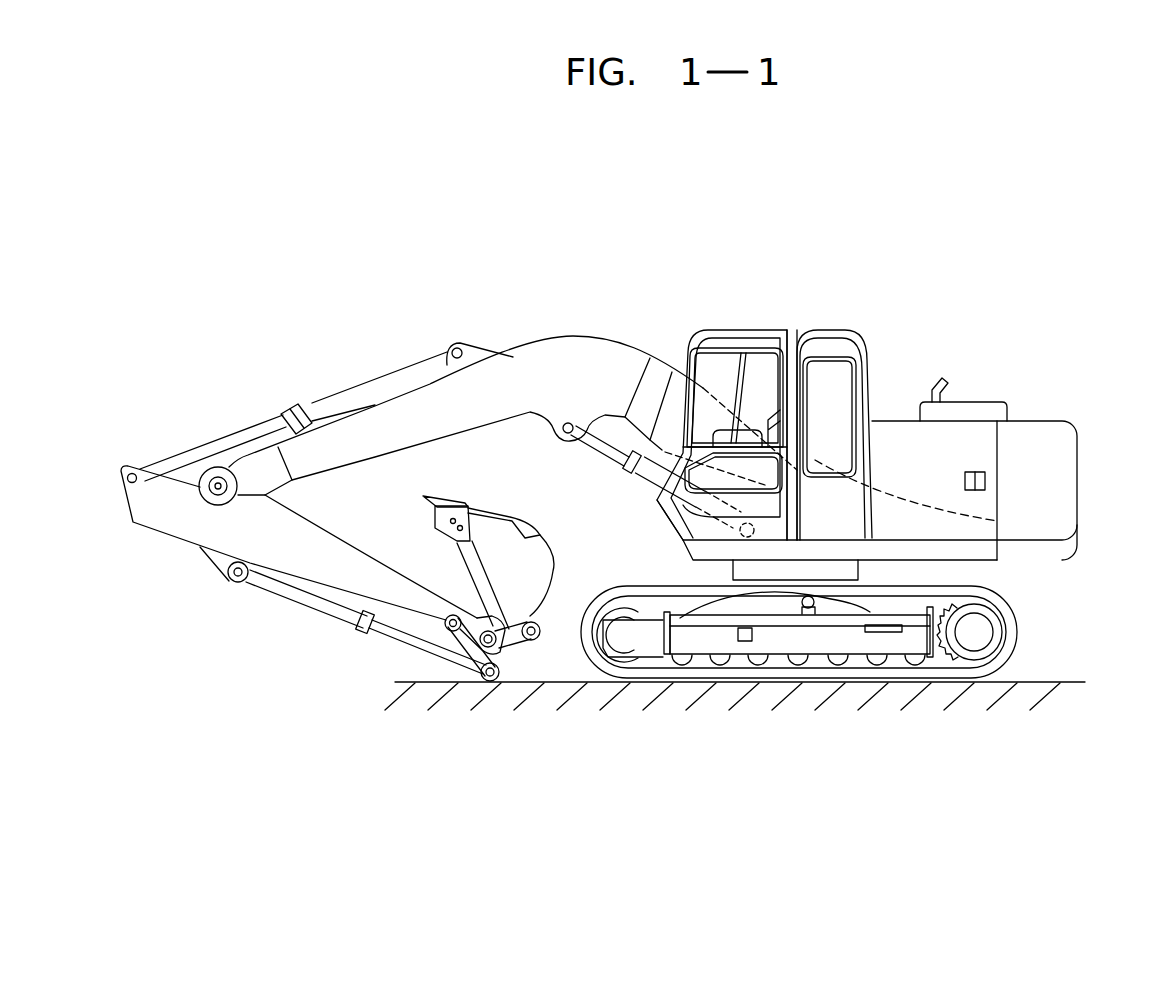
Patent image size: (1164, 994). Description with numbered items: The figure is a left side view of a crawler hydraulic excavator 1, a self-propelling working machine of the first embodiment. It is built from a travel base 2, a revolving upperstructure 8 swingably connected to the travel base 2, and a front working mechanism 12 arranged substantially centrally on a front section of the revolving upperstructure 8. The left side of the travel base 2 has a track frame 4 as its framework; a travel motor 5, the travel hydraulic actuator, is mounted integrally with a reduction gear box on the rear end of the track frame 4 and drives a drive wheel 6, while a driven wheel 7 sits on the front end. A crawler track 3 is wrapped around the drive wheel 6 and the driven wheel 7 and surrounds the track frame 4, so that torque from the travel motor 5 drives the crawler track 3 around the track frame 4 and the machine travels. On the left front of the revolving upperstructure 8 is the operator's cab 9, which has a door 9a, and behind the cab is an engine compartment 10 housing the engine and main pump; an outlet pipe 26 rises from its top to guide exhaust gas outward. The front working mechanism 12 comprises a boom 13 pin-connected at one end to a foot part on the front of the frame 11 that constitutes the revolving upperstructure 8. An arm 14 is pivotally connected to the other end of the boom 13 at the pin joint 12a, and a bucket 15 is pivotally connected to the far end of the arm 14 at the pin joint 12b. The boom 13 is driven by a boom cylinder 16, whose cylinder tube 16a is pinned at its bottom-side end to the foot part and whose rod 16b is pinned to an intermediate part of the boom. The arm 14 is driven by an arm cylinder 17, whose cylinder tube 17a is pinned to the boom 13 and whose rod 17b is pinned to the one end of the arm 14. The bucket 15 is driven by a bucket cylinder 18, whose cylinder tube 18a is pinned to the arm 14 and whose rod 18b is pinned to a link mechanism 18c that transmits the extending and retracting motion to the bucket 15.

The crawler hydraulic excavator 1 is at (330, 254).
The travel base 2 is at (1030, 608).
The crawler track 3 is at (1012, 657).
The track frame 4 is at (797, 633).
The travel motor 5 is at (969, 645).
The drive wheel 6 is at (937, 652).
The driven wheel 7 is at (620, 612).
The revolving upperstructure 8 is at (836, 314).
The operator's cab 9 is at (757, 340).
The door 9a is at (724, 352).
The engine compartment 10 is at (978, 432).
The frame 11 is at (883, 497).
The front working mechanism 12 is at (547, 326).
The pin joint 12a is at (210, 480).
The pin joint 12b is at (500, 637).
The boom 13 is at (597, 345).
The arm 14 is at (175, 528).
The bucket 15 is at (495, 538).
The boom cylinder 16 is at (615, 480).
The cylinder tube 16a is at (641, 490).
The rod 16b is at (592, 450).
The arm cylinder 17 is at (292, 408).
The cylinder tube 17a is at (373, 375).
The rod 17b is at (218, 438).
The bucket cylinder 18 is at (356, 626).
The cylinder tube 18a is at (305, 607).
The rod 18b is at (400, 648).
The link mechanism 18c is at (468, 645).
The outlet pipe 26 is at (944, 375).